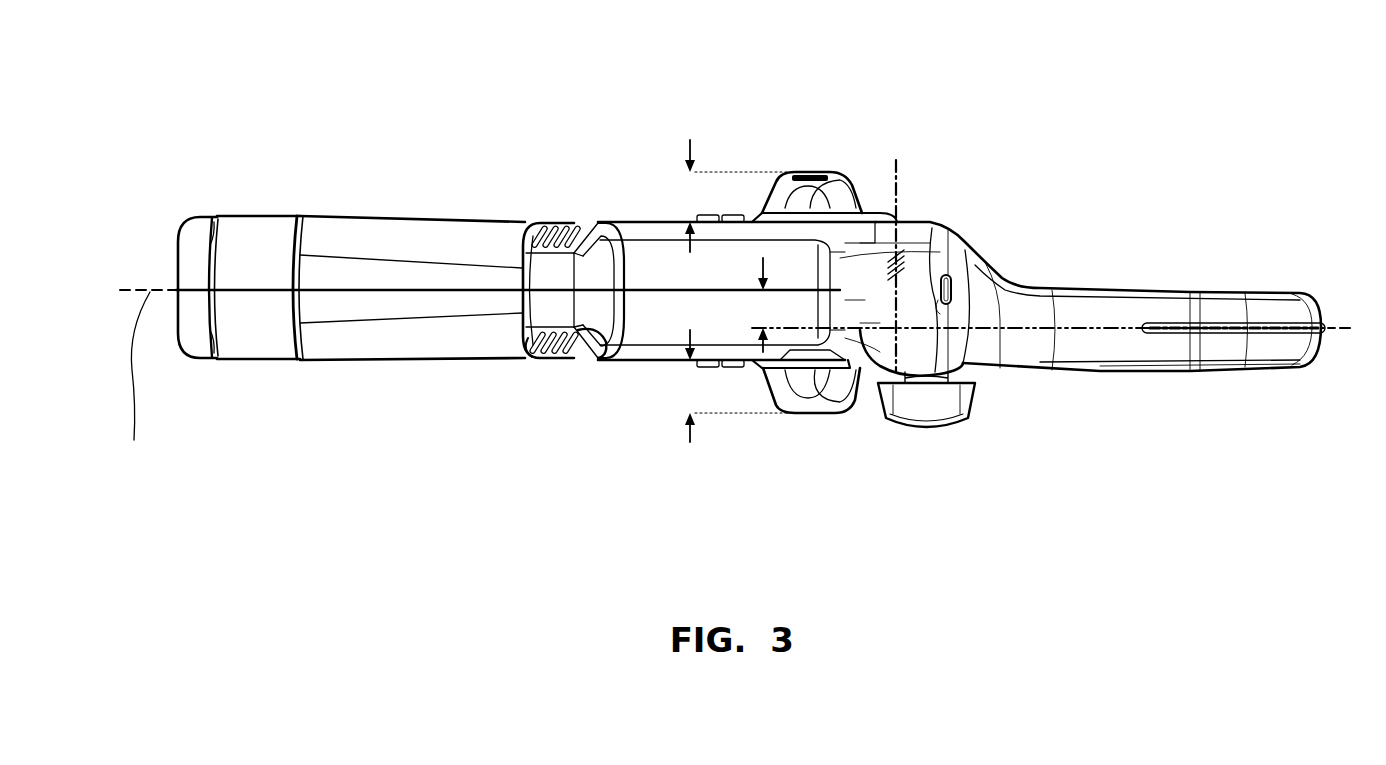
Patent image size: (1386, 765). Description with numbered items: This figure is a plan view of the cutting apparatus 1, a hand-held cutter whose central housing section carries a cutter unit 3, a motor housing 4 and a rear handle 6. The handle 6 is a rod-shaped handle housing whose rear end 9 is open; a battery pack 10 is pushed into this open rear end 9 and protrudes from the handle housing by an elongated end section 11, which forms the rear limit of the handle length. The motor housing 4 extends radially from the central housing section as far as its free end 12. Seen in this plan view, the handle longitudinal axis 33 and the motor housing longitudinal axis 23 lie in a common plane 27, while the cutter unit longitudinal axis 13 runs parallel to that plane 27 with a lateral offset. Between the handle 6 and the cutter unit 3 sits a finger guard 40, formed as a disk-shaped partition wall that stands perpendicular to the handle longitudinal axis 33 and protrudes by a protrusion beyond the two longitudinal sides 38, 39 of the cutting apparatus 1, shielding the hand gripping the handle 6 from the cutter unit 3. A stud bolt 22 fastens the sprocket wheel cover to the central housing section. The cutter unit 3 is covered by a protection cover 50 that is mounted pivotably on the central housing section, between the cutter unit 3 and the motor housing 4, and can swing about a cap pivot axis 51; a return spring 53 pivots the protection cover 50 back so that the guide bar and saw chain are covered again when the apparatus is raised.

The cutting apparatus 1 is at (1030, 150).
The cutter unit 3 is at (1217, 284).
The motor housing 4 is at (612, 222).
The handle 6 is at (421, 343).
The rear end 9 is at (300, 314).
The battery pack 10 is at (262, 246).
The end section 11 is at (190, 332).
The free end 12 is at (541, 273).
The cutter unit longitudinal axis 13 is at (1344, 326).
The stud bolt 22 is at (940, 400).
The motor housing longitudinal axis 23 is at (593, 343).
The common plane 27 is at (132, 386).
The handle longitudinal axis 33 is at (393, 288).
The longitudinal side 38 is at (668, 222).
The longitudinal side 39 is at (670, 362).
The finger guard 40 is at (801, 176).
The protection cover 50 is at (1087, 306).
The cap pivot axis 51 is at (899, 176).
The return spring 53 is at (906, 260).